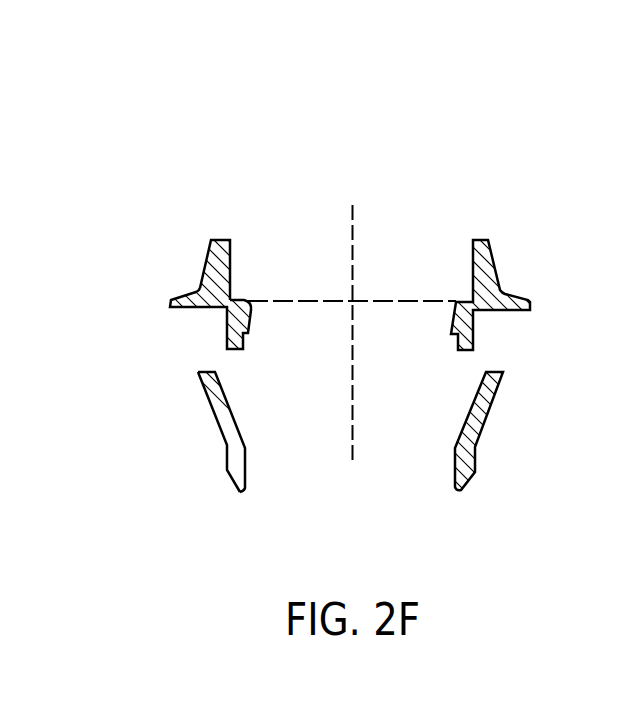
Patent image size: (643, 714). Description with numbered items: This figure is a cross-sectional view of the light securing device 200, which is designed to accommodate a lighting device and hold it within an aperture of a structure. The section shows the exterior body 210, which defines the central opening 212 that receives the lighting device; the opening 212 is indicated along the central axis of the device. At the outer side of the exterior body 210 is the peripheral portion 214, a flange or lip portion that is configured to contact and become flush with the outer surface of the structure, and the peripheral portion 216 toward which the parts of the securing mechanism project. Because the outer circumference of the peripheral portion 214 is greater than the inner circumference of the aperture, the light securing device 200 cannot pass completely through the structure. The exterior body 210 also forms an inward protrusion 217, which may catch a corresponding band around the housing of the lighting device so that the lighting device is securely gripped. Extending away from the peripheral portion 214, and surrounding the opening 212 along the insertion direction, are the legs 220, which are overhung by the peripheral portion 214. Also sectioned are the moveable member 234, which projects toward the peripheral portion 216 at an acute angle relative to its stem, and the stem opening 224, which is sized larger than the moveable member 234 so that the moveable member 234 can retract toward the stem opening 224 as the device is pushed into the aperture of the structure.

The light securing device 200 is at (480, 201).
The exterior body 210 is at (85, 135).
The opening 212 is at (292, 250).
The peripheral portion 214 is at (190, 294).
The peripheral portion 216 is at (209, 250).
The inward protrusion 217 is at (247, 306).
The legs 220 is at (242, 493).
The stem opening 224 is at (486, 357).
The moveable member 234 is at (209, 400).